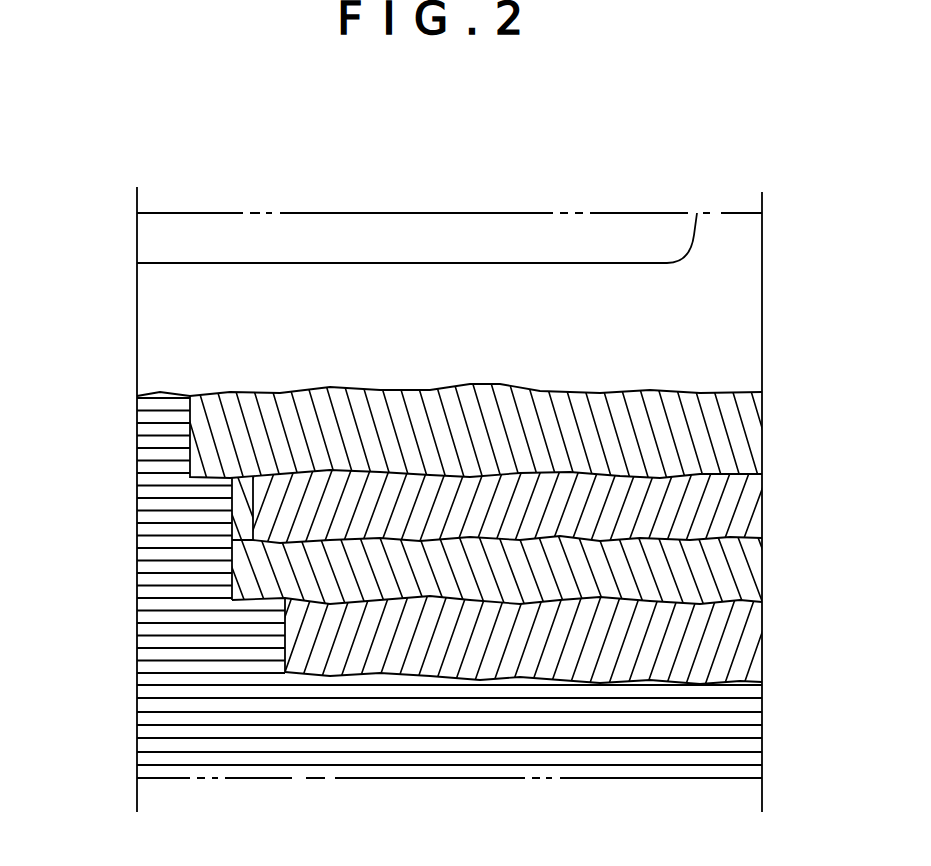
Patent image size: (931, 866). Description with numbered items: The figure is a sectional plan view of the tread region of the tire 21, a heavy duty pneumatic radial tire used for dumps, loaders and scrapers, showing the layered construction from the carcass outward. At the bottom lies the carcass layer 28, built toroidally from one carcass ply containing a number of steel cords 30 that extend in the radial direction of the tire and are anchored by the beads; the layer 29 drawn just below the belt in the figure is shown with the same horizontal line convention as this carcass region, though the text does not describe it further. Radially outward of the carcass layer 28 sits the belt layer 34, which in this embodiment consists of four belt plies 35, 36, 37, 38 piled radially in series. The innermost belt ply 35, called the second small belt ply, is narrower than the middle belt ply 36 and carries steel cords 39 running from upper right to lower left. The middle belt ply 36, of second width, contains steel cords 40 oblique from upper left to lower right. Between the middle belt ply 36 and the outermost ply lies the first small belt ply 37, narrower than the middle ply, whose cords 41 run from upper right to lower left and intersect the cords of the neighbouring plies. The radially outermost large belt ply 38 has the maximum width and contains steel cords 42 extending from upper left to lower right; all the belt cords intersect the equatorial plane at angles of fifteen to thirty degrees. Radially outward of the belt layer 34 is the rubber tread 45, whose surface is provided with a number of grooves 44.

The tire 21 is at (487, 213).
The carcass layer 28 is at (301, 765).
The substrate 29 is at (158, 731).
The steel cords 30 is at (168, 660).
The belt layer 34 is at (457, 401).
The innermost belt ply 35 is at (539, 641).
The middle belt ply 36 is at (507, 540).
The first small belt ply 37 is at (524, 499).
The large belt ply 38 is at (457, 405).
The steel cords 39 is at (720, 638).
The steel cords 40 is at (735, 590).
The steel cords 41 is at (734, 527).
The steel cords 42 is at (600, 404).
The grooves 44 is at (379, 263).
The tread 45 is at (716, 241).